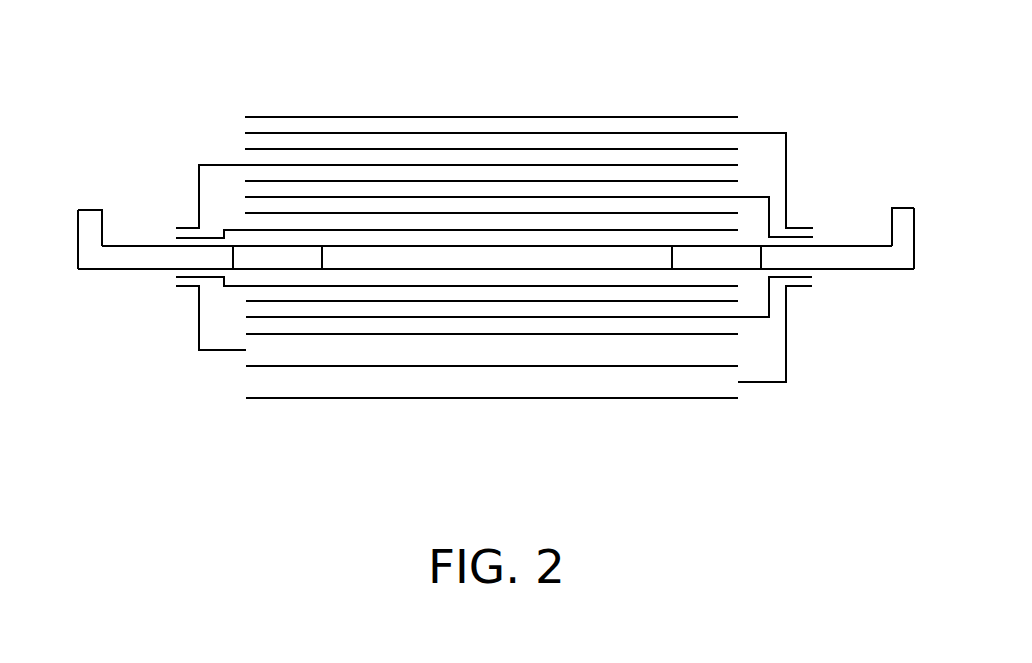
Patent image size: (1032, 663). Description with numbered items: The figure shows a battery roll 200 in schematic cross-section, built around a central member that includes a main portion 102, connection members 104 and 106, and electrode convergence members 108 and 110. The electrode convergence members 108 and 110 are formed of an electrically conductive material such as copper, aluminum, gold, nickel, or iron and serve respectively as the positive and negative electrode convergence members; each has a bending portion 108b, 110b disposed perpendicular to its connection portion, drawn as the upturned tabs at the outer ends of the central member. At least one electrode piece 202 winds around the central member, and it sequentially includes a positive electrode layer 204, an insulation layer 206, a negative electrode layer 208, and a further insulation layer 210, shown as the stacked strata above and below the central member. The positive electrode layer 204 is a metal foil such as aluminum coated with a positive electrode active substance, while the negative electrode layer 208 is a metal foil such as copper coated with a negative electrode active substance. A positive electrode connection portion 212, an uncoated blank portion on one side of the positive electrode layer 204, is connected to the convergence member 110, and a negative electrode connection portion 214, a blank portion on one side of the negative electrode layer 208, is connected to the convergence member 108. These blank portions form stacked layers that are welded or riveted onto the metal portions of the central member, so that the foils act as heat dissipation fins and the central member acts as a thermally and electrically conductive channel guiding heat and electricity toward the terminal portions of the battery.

The battery roll 200 is at (548, 67).
The main portion 102 is at (487, 260).
The connection member 104 is at (710, 257).
The connection member 106 is at (277, 258).
The electrode convergence member 108 is at (877, 257).
The bending portion 108b is at (903, 220).
The electrode convergence member 110 is at (148, 257).
The bending portion 110b is at (90, 222).
The electrode piece 202 is at (90, 378).
The positive electrode layer 204 is at (246, 287).
The insulation layer 206 is at (247, 301).
The negative electrode layer 208 is at (246, 317).
The insulation layer 210 is at (246, 334).
The positive electrode connection portion 212 is at (199, 312).
The negative electrode connection portion 214 is at (787, 342).